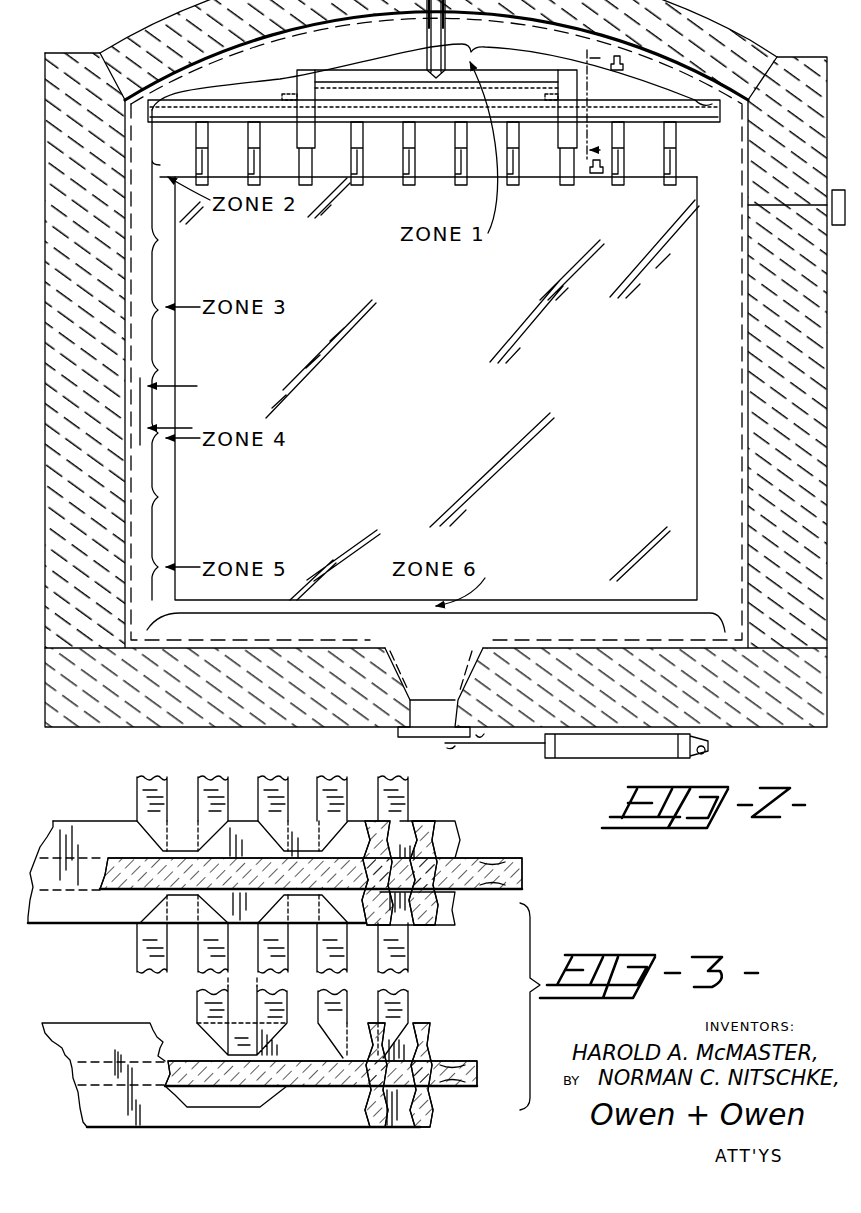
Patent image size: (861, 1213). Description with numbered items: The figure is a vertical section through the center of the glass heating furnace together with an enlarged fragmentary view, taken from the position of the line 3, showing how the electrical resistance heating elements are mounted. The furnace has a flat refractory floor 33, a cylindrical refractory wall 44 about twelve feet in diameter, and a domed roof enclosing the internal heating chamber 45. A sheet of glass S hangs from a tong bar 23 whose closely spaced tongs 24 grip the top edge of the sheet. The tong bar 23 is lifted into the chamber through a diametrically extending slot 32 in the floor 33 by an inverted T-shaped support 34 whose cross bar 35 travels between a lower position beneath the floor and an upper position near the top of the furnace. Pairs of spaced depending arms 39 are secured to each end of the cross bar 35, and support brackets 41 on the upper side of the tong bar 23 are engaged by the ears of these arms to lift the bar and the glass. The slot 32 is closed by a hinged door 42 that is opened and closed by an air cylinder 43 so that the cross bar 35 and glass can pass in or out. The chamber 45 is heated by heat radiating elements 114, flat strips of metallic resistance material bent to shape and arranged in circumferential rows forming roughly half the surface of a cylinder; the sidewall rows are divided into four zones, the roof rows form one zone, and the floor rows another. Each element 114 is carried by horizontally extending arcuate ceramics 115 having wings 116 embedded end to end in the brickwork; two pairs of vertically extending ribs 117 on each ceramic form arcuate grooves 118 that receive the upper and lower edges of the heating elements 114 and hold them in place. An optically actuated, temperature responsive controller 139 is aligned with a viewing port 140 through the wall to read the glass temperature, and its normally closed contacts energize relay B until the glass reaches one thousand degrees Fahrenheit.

In FIG. 2, the sheet of glass S is at (458, 406).
In FIG. 2, the section line 3— 3 is at (171, 402).
In FIG. 2, the relay B is at (605, 111).
In FIG. 2, the tong bar 23 is at (375, 130).
In FIG. 2, the tongs 24 is at (352, 182).
In FIG. 2, the slot 32 is at (470, 636).
In FIG. 2, the floor 33 is at (370, 648).
In FIG. 2, the inverted T-shaped support 34 is at (425, 38).
In FIG. 2, the cross bar 35 is at (370, 72).
In FIG. 2, the depending arms 39 is at (608, 110).
In FIG. 2, the support brackets 41 is at (293, 97).
In FIG. 2, the hinged door 42 is at (405, 738).
In FIG. 2, the air cylinder 43 is at (597, 760).
In FIG. 2, the cylindrical wall 44 is at (745, 452).
In FIG. 3, the cylindrical wall 44 is at (100, 1005).
In FIG. 2, the internal heating chamber 45 is at (723, 300).
In FIG. 2, the heat radiating elements 114 is at (233, 57).
In FIG. 3, the heat radiating elements 114 is at (137, 792).
In FIG. 3, the arcuate ceramics 115 is at (530, 895).
In FIG. 3, the horizontal wings 116 is at (522, 873).
In FIG. 3, the ribs 117 is at (437, 826).
In FIG. 3, the arcuate grooves 118 is at (128, 840).
In FIG. 2, the temperature responsive controller 139 is at (840, 227).
In FIG. 2, the viewing port 140 is at (778, 205).